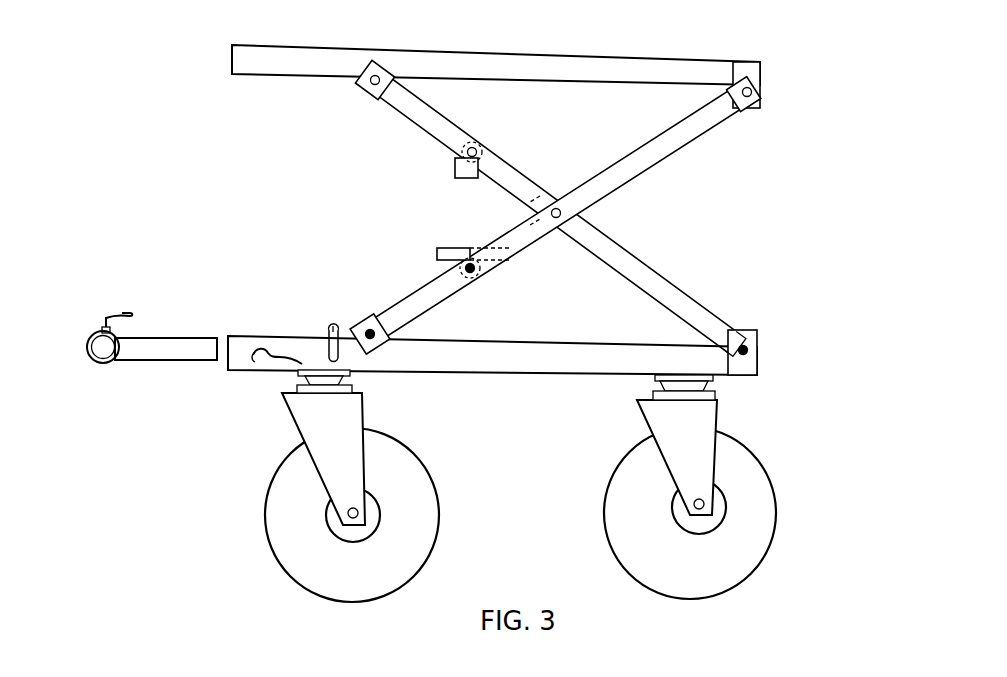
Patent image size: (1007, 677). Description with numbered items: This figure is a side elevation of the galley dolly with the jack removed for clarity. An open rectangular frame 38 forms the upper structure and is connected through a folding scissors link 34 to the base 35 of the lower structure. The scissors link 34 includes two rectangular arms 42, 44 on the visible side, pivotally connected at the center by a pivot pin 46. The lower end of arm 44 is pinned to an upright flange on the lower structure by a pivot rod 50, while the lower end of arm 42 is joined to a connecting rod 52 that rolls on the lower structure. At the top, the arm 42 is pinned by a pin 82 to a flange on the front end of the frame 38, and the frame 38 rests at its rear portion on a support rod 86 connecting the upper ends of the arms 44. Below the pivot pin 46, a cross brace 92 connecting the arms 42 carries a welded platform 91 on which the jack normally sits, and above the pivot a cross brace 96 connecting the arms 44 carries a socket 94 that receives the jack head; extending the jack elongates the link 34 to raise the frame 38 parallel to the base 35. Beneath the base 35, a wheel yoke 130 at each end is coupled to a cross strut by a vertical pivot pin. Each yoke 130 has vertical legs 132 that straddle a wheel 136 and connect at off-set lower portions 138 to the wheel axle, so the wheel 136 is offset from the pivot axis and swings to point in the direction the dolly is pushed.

The folding scissors link 34 is at (672, 202).
The base 35 is at (504, 380).
The open rectangular frame 38 is at (250, 58).
The rectangular arm 42 is at (690, 127).
The rectangular arm 44 is at (685, 305).
The pivot pin 46 is at (557, 200).
The pivot rod 50 is at (757, 350).
The connecting rod 52 is at (363, 327).
The pin 82 is at (760, 93).
The support rod 86 is at (370, 83).
The platform 91 is at (450, 252).
The cross brace 92 is at (473, 275).
The socket 94 is at (463, 167).
The cross brace 96 is at (475, 148).
The wheel yoke 130 is at (311, 486).
The vertical leg 132 is at (737, 487).
The wheel 136 is at (293, 532).
The off-set lower portion 138 is at (707, 497).